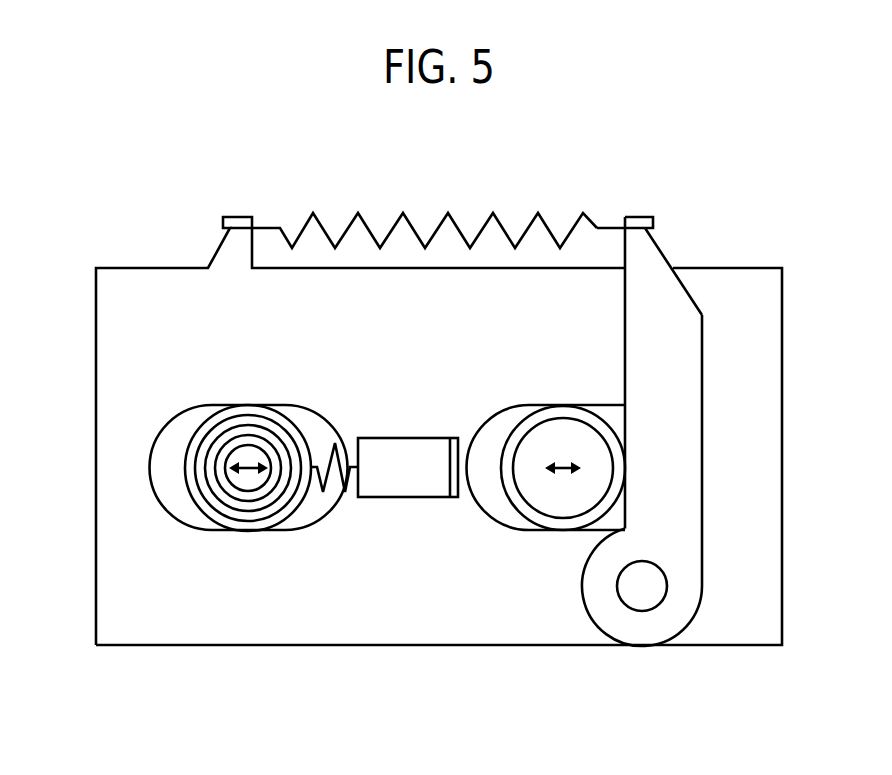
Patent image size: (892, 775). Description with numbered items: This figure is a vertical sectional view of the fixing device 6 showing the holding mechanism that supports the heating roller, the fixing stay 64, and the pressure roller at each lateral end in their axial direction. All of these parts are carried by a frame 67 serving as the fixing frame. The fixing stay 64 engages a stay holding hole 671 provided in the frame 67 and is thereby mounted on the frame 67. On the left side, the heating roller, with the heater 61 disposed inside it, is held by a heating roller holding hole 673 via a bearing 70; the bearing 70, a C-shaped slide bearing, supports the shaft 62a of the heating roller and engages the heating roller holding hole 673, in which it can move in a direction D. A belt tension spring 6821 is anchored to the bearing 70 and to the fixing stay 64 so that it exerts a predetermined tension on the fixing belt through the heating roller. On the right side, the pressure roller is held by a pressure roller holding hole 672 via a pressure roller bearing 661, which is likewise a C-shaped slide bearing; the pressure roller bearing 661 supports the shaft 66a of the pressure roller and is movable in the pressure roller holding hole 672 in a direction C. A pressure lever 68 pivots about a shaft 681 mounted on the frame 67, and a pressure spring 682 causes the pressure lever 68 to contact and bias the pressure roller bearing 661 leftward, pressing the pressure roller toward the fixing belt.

The fixing device 6 is at (603, 160).
The frame 67 is at (730, 268).
The pressure lever 68 is at (688, 510).
The shaft 681 is at (658, 583).
The pressure spring 682 is at (387, 220).
The heating roller holding hole 673 is at (173, 414).
The bearing 70 is at (186, 452).
The shaft of the heating roller 62a is at (213, 505).
The heater 61 is at (250, 450).
The direction D is at (247, 475).
The belt tension spring 6821 is at (318, 487).
The fixing stay 64 is at (390, 482).
The stay holding hole 671 is at (427, 499).
The pressure roller holding hole 672 is at (491, 412).
The shaft of the pressure roller 66a is at (567, 425).
The pressure roller bearing 661 is at (558, 522).
The direction C is at (563, 456).